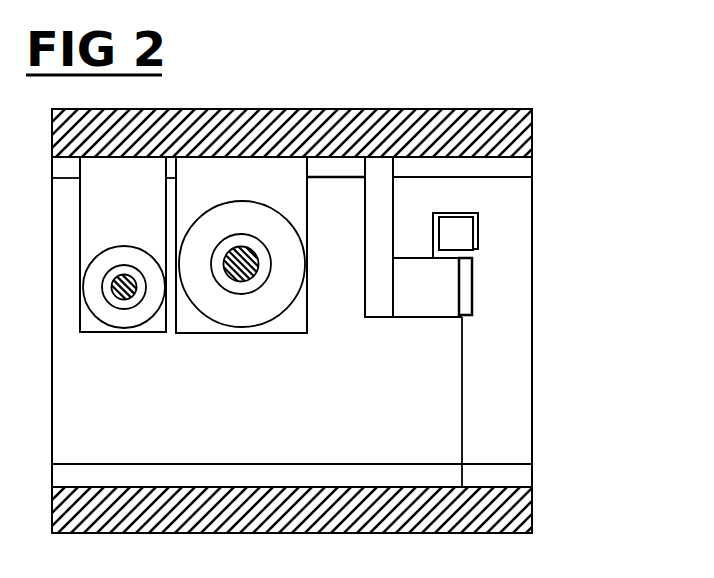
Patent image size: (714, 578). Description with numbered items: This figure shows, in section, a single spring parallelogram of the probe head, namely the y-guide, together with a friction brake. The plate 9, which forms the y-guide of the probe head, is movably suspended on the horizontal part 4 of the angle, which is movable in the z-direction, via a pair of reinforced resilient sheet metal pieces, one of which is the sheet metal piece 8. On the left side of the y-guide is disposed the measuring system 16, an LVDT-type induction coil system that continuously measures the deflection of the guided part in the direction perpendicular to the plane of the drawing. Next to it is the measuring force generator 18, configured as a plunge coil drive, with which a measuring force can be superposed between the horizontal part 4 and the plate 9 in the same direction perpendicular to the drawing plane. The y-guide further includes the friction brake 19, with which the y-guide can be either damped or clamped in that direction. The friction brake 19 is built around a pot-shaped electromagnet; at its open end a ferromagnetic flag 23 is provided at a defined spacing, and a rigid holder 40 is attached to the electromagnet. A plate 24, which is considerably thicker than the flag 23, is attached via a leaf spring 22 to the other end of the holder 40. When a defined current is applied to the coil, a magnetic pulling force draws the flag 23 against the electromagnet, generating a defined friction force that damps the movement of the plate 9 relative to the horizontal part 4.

The horizontal part 4 is at (516, 143).
The resilient sheet metal piece 8 is at (503, 357).
The plate 9 is at (526, 507).
The measuring system 16 is at (141, 348).
The measuring force generator 18 is at (234, 350).
The friction brake 19 is at (424, 337).
The leaf spring 22 is at (472, 253).
The flag 23 is at (465, 391).
The plate 24 is at (467, 288).
The holder 40 is at (478, 215).